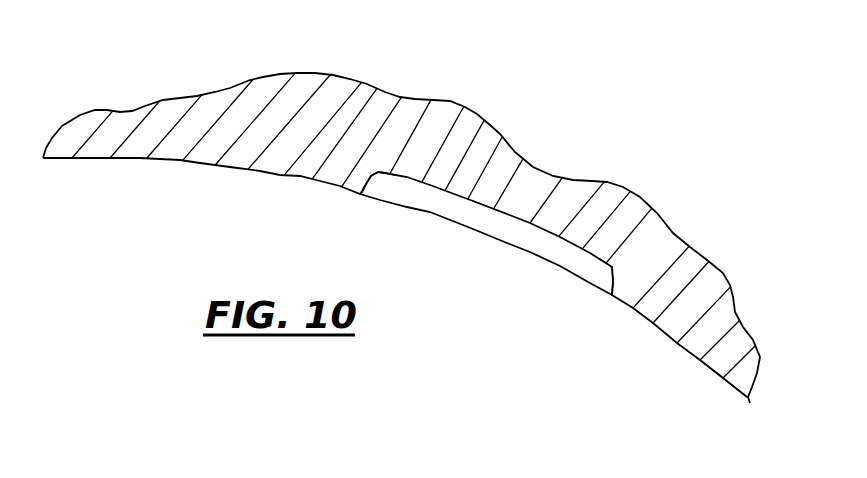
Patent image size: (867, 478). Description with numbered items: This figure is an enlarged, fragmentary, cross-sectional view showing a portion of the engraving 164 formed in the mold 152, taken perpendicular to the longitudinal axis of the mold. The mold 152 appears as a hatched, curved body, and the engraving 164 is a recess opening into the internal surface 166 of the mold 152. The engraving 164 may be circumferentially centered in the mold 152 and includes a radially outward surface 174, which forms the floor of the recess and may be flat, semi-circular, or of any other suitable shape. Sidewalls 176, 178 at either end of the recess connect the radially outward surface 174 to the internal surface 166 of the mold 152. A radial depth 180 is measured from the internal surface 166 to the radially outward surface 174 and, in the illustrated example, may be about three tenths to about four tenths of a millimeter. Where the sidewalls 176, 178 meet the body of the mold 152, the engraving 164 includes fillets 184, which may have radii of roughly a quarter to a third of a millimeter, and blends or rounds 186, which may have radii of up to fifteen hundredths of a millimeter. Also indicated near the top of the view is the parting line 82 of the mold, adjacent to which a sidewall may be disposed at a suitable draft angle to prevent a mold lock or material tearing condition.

The parting line 82 is at (785, 0).
The mold 152 is at (683, 202).
The engraving 164 is at (477, 338).
The internal surface 166 is at (720, 376).
The radially outward surface 174 is at (432, 197).
The sidewall 176 is at (369, 184).
The sidewall 178 is at (612, 281).
The radial depth 180 is at (497, 184).
The fillet 184 is at (381, 168).
The round 186 is at (363, 202).